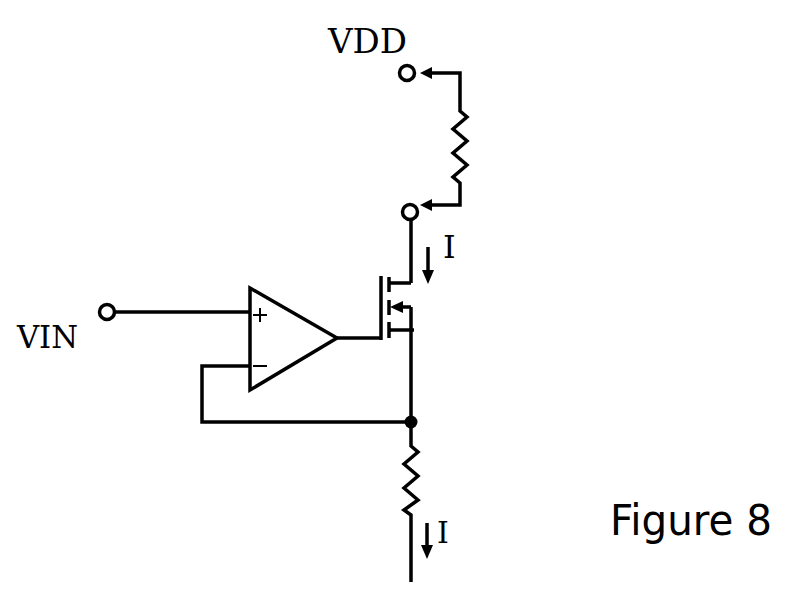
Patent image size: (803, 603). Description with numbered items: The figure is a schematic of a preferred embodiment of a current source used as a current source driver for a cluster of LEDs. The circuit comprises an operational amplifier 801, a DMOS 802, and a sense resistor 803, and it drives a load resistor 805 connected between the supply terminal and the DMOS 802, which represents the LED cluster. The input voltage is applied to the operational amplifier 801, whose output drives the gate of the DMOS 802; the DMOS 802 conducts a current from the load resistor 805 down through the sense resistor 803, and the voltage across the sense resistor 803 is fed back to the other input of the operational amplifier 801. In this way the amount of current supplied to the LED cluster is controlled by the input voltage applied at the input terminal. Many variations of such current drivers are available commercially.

The operational amplifier 801 is at (252, 278).
The DMOS 802 is at (427, 314).
The sense resistor 803 is at (393, 486).
The load resistor RL 805 is at (442, 155).